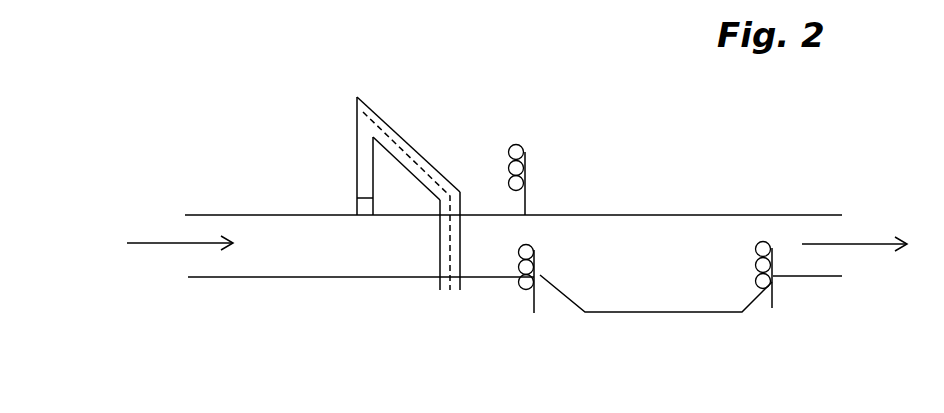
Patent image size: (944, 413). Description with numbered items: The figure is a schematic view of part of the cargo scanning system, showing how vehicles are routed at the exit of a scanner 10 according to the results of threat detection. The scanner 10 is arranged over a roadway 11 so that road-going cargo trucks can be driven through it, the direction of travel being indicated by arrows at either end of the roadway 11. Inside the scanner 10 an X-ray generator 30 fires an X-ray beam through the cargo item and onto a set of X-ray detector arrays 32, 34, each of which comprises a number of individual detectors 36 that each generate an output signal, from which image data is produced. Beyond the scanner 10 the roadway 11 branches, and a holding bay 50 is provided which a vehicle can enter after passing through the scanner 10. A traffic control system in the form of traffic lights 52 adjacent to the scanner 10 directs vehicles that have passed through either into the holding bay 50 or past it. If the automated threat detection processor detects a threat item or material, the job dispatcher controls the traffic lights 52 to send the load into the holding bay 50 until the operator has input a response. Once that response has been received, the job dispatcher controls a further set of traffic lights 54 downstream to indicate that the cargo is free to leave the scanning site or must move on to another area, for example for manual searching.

The scanner 10 is at (388, 160).
The roadway 11 is at (250, 227).
The X-ray generator 30 is at (364, 210).
The X-ray detector array 32 is at (413, 147).
The X-ray detector array 34 is at (461, 213).
The individual detector 36 is at (395, 142).
The holding bay 50 is at (667, 300).
The traffic lights 52 is at (525, 165).
The further set of traffic lights 54 is at (770, 245).